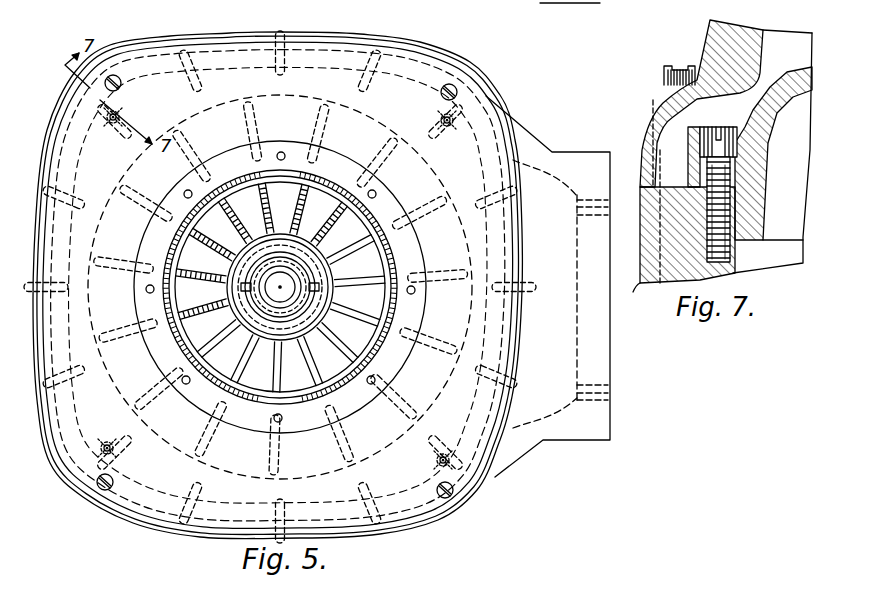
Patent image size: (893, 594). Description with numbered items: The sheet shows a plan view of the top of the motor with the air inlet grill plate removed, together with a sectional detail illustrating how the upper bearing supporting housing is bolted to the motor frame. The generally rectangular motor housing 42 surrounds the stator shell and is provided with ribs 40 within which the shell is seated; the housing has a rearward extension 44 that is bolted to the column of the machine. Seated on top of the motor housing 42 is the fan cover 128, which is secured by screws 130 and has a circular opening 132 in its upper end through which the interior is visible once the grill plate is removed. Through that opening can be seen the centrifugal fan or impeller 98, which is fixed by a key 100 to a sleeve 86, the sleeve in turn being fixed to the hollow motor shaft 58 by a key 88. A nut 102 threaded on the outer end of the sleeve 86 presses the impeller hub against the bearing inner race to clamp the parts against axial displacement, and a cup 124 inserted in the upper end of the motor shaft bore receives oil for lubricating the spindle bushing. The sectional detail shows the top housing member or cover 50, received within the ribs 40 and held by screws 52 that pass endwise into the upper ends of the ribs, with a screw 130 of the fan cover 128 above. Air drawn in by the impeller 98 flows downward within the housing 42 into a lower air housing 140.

In FIG. 5, the fan cover 128 is at (313, 72).
In FIG. 7, the fan cover 128 is at (710, 24).
In FIG. 5, the screws 130 is at (116, 74).
In FIG. 7, the screws 130 is at (676, 66).
In FIG. 5, the ribs 40 is at (122, 113).
In FIG. 7, the ribs 40 is at (735, 262).
In FIG. 5, the circular opening 132 is at (238, 200).
In FIG. 5, the centrifugal fan or impeller 98 is at (326, 182).
In FIG. 5, the key 88 is at (246, 283).
In FIG. 5, the sleeve 86 is at (250, 305).
In FIG. 5, the cup 124 is at (300, 282).
In FIG. 5, the nut 102 is at (312, 303).
In FIG. 5, the motor shaft 58 is at (240, 290).
In FIG. 5, the key 100 is at (320, 289).
In FIG. 5, the rearward extension 44 is at (610, 347).
In FIG. 5, the lower air housing 140 is at (560, 4).
In FIG. 7, the screws 52 is at (700, 145).
In FIG. 7, the top housing member or cover 50 is at (762, 173).
In FIG. 7, the motor housing 42 is at (636, 208).